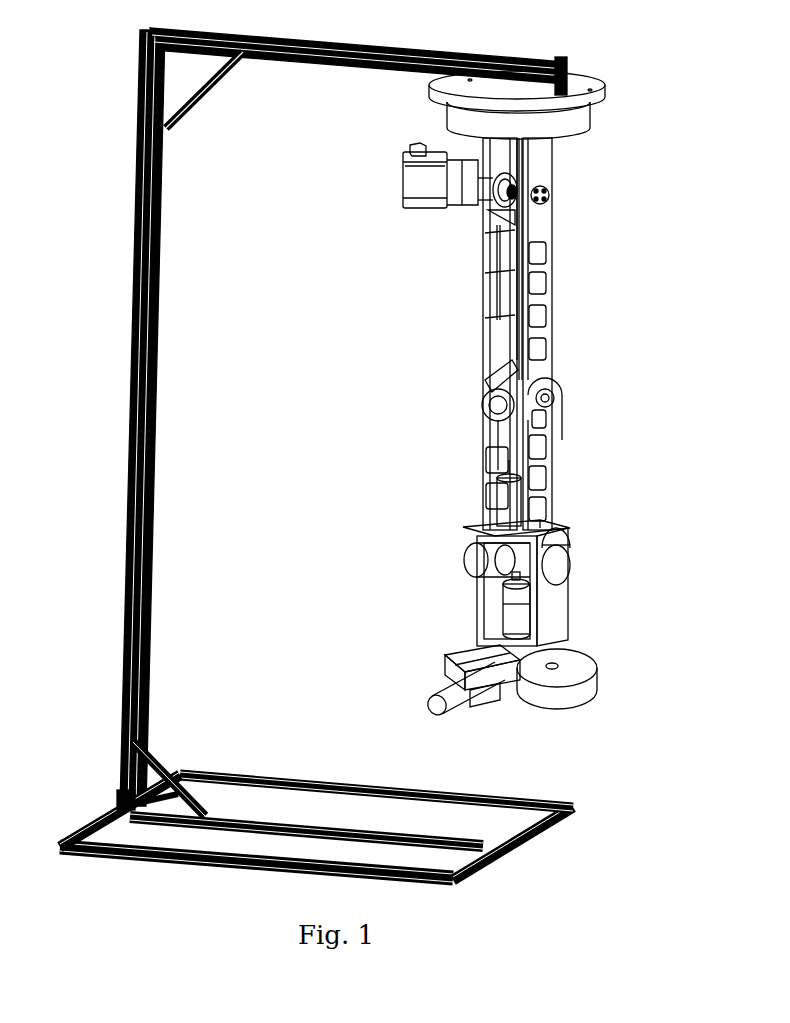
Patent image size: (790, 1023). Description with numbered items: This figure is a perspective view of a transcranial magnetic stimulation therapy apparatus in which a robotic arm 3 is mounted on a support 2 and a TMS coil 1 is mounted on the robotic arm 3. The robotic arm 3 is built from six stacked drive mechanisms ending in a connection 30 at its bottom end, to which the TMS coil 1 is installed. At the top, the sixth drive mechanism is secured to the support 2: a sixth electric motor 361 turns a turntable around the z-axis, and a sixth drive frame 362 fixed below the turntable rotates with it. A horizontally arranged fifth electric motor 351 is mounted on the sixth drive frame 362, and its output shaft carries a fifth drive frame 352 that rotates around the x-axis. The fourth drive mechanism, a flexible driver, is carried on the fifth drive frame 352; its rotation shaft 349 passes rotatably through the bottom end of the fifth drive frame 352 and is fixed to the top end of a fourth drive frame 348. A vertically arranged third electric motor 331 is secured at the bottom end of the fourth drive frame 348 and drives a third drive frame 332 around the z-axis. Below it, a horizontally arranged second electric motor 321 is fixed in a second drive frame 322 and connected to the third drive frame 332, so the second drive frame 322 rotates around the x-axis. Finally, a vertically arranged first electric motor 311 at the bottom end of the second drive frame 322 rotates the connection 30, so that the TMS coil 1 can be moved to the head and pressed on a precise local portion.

The TMS coil 1 is at (590, 700).
The support 2 is at (132, 418).
The robotic arm 3 is at (483, 318).
The connection 30 is at (460, 663).
The first electric motor 311 is at (520, 633).
The second electric motor 321 is at (497, 552).
The second drive frame 322 is at (553, 593).
The third electric motor 331 is at (510, 497).
The third drive frame 332 is at (565, 553).
The fourth drive frame 348 is at (483, 428).
The rotation shaft 349 is at (548, 403).
The fifth electric motor 351 is at (410, 178).
The fifth drive frame 352 is at (485, 290).
The sixth electric motor 361 is at (525, 158).
The sixth drive frame 362 is at (500, 137).